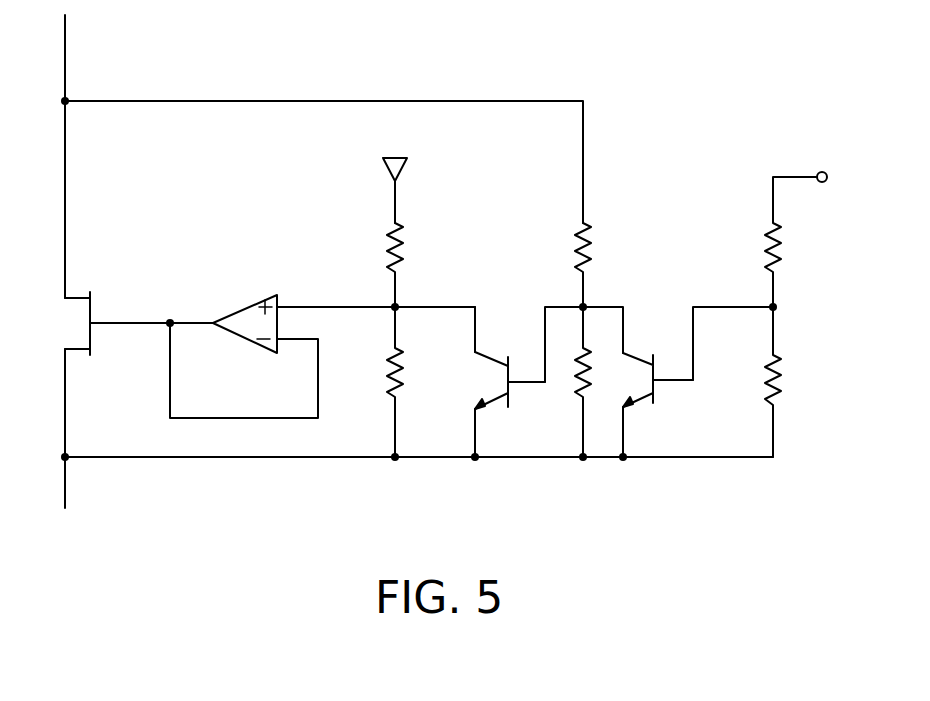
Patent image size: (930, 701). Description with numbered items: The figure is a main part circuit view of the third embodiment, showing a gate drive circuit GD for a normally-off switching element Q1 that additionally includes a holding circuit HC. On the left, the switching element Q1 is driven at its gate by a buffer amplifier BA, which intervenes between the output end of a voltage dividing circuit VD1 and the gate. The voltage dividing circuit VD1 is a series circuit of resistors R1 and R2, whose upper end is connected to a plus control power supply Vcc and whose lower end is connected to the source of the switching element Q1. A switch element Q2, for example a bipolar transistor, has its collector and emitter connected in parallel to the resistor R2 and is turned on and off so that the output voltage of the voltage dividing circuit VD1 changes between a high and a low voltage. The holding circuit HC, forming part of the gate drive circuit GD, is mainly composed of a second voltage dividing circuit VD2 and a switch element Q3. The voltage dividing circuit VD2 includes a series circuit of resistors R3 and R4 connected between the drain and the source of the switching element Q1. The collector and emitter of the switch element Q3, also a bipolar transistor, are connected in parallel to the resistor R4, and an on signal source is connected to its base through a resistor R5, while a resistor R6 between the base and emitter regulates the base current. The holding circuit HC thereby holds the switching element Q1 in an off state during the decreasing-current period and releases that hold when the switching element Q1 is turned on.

The switching element Q1 is at (79, 322).
The buffer amplifier BA is at (240, 340).
The plus control power supply Vcc is at (393, 156).
The gate drive circuit GD is at (500, 205).
The resistor R1 is at (384, 250).
The resistor R2 is at (385, 379).
The resistor R3 is at (574, 250).
The resistor R4 is at (576, 386).
The resistor R5 is at (765, 250).
The resistor R6 is at (764, 384).
The switch element Q2 is at (492, 380).
The switch element Q3 is at (641, 354).
The voltage dividing circuit VD1 is at (412, 281).
The voltage dividing circuit VD2 is at (663, 253).
The holding circuit HC is at (697, 213).